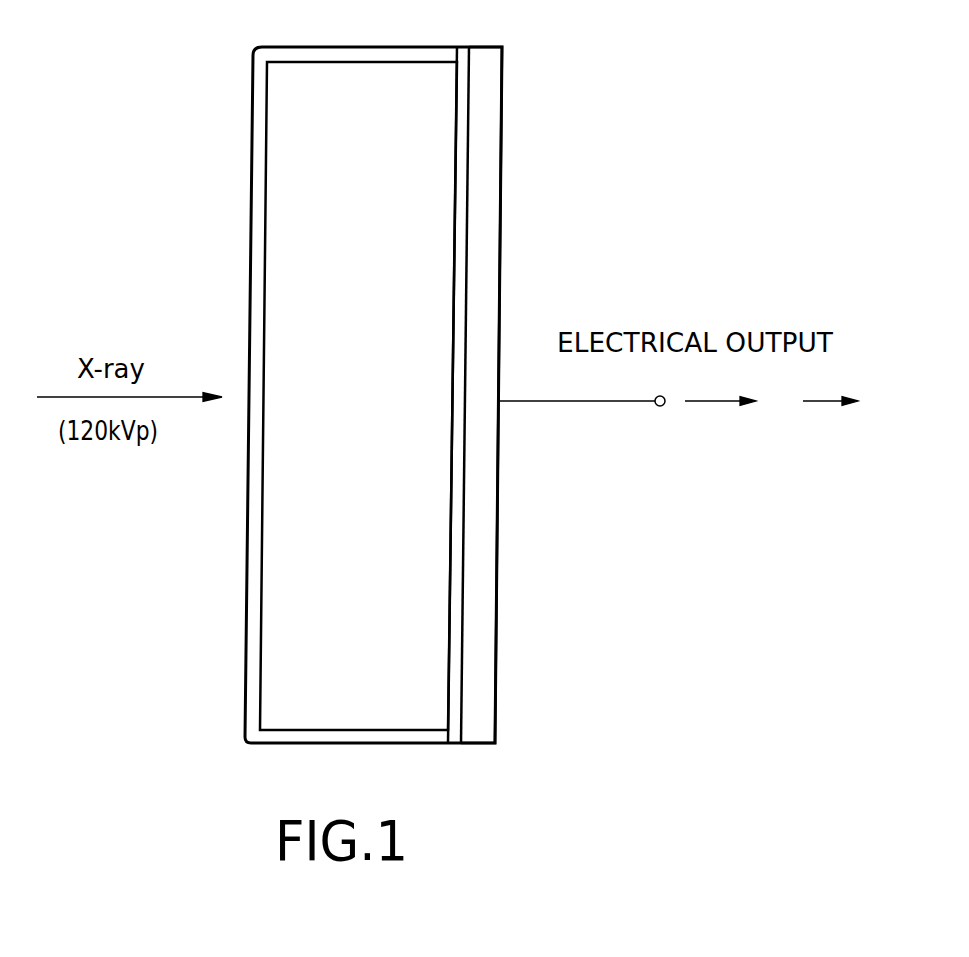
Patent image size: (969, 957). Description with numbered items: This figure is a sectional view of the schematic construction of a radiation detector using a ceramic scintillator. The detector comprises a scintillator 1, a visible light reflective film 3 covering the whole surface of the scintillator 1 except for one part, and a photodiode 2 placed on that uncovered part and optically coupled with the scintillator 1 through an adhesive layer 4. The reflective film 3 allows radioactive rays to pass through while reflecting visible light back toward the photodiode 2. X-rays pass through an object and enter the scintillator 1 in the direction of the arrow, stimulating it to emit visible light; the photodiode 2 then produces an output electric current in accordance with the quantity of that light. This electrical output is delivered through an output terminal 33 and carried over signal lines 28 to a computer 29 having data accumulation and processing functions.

The scintillator 1 is at (280, 282).
The photodiode 2 is at (485, 543).
The visible light reflective film 3 is at (258, 213).
The adhesive layer 4 is at (452, 745).
The signal lines 28 is at (776, 406).
The computer 29 is at (877, 406).
The output terminal 33 is at (660, 406).